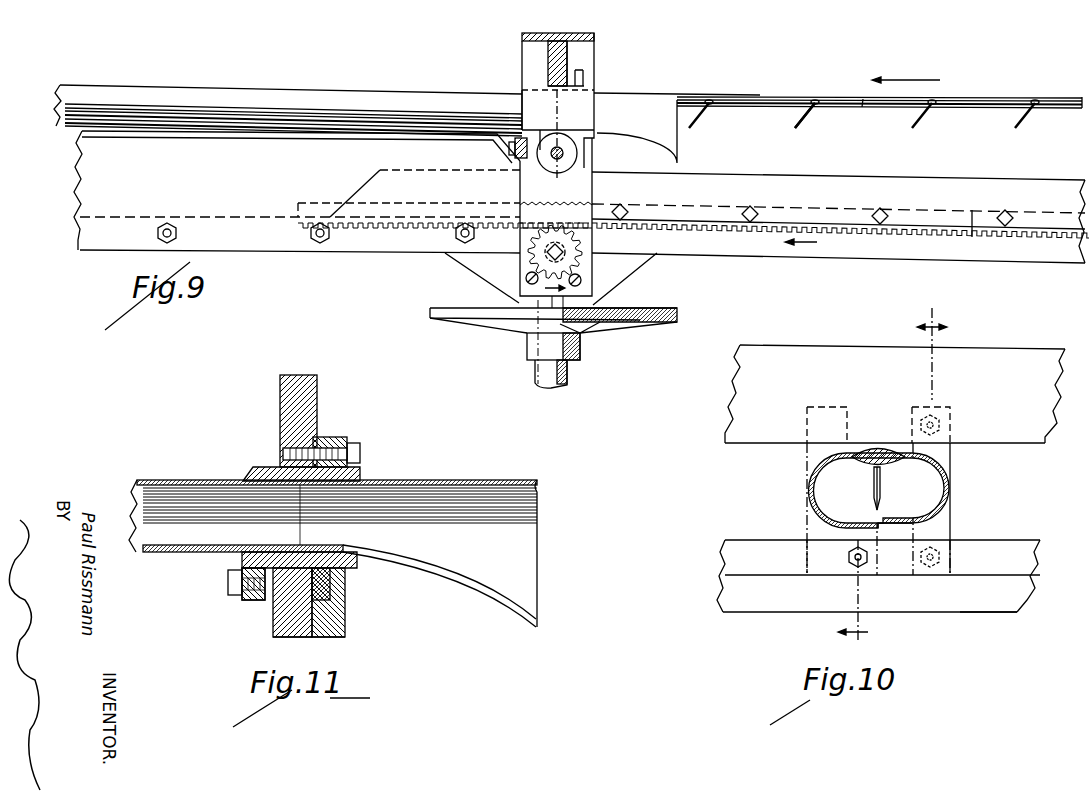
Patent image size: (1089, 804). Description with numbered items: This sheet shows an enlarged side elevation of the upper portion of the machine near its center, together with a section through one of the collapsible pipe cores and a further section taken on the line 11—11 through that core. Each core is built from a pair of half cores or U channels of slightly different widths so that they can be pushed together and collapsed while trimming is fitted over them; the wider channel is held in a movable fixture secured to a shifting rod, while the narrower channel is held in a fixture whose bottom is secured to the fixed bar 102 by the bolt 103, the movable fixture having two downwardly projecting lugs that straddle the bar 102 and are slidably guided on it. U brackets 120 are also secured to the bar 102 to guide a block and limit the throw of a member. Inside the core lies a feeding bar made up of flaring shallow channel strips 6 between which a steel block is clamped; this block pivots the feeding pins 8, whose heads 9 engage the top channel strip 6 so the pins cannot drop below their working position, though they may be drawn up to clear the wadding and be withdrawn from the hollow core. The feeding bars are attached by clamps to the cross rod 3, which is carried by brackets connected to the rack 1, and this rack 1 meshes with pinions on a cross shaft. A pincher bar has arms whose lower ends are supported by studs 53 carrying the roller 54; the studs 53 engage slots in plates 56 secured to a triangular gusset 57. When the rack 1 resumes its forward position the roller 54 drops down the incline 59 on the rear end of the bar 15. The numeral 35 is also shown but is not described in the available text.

In FIG. 9, the rack 1 is at (972, 210).
In FIG. 10, the cross rod 3 is at (878, 493).
In FIG. 9, the channel strip 6 is at (817, 100).
In FIG. 10, the channel strip 6 is at (861, 446).
In FIG. 9, the feeding pin 8 is at (765, 131).
In FIG. 9, the head 9 is at (567, 60).
In FIG. 10, the head 9 is at (895, 394).
In FIG. 10, the section line 11 is at (942, 307).
In FIG. 9, the bar 15 is at (663, 218).
In FIG. 9, the guide rail 35 is at (235, 88).
In FIG. 9, the stud 53 is at (564, 150).
In FIG. 9, the roller 54 is at (578, 153).
In FIG. 9, the plate 56 is at (585, 215).
In FIG. 9, the triangular gusset 57 is at (645, 276).
In FIG. 9, the incline 59 is at (362, 186).
In FIG. 10, the fixed bar 102 is at (978, 612).
In FIG. 11, the fixed bar 102 is at (290, 638).
In FIG. 10, the bolt 103 is at (913, 592).
In FIG. 9, the U bracket 120 is at (515, 161).